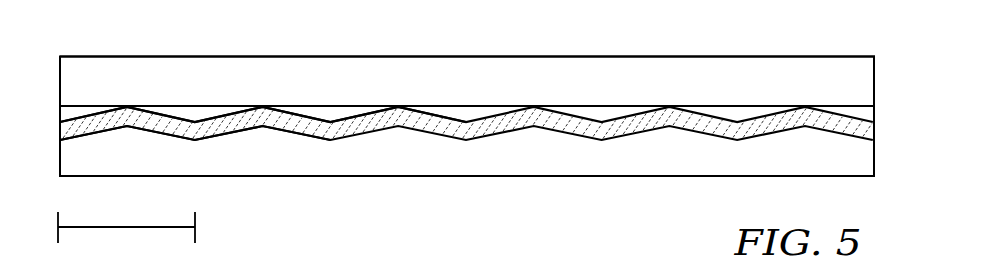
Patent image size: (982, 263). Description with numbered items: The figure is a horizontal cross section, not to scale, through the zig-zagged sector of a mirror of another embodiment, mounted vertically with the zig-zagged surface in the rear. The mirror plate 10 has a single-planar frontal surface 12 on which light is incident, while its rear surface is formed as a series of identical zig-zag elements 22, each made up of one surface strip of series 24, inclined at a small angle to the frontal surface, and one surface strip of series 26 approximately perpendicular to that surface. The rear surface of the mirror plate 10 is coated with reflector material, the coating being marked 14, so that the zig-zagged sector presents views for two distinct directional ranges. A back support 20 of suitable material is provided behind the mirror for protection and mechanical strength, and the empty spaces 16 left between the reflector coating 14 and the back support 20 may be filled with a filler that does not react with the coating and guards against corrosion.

The mirror plate 10 is at (467, 141).
The frontal surface 12 is at (552, 175).
The reflector coating 14 is at (463, 128).
The empty spaces 16 is at (338, 110).
The back support 20 is at (467, 82).
The zig-zag elements 22 is at (126, 215).
The surface strips of series 24 is at (315, 138).
The surface strips of series 26 is at (230, 133).